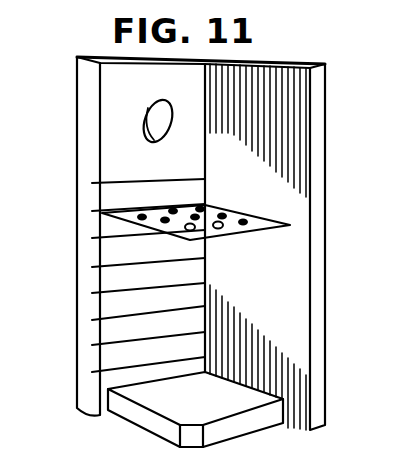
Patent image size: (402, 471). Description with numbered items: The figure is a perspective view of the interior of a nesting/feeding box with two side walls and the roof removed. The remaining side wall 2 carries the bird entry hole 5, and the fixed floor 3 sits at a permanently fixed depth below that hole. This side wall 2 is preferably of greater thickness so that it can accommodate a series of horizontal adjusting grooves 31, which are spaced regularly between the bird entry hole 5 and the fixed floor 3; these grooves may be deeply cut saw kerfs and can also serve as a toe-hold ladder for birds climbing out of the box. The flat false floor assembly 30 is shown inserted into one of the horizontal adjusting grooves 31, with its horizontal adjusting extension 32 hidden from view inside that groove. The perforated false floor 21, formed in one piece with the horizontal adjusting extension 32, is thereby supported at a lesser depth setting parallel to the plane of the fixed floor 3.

The side wall 2 is at (195, 146).
The fixed floor 3 is at (258, 418).
The bird entry hole 5 is at (165, 101).
The perforated false floor 21 is at (251, 224).
The flat false floor assembly 30 is at (102, 208).
The horizontal adjusting grooves 31 is at (70, 168).
The horizontal adjusting extension 32 is at (110, 212).